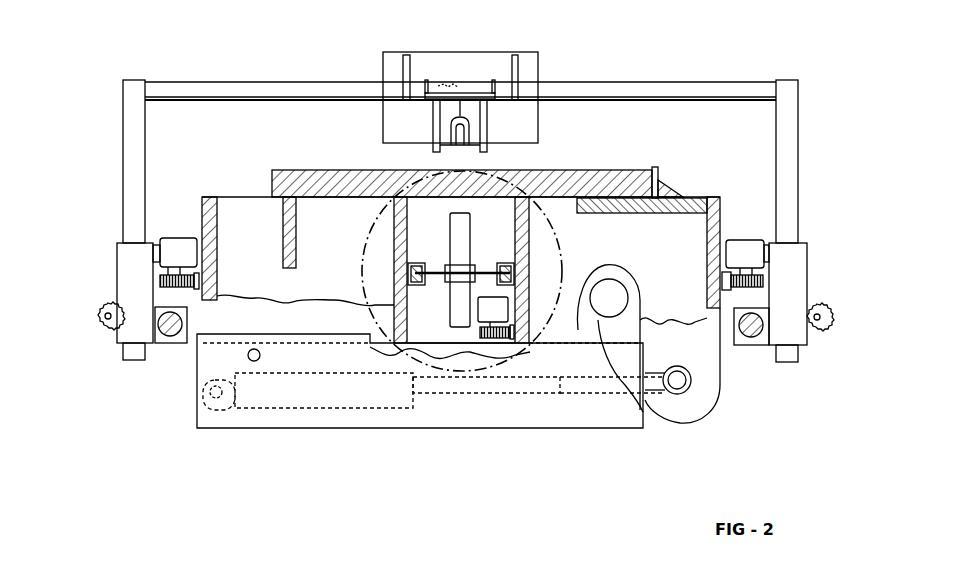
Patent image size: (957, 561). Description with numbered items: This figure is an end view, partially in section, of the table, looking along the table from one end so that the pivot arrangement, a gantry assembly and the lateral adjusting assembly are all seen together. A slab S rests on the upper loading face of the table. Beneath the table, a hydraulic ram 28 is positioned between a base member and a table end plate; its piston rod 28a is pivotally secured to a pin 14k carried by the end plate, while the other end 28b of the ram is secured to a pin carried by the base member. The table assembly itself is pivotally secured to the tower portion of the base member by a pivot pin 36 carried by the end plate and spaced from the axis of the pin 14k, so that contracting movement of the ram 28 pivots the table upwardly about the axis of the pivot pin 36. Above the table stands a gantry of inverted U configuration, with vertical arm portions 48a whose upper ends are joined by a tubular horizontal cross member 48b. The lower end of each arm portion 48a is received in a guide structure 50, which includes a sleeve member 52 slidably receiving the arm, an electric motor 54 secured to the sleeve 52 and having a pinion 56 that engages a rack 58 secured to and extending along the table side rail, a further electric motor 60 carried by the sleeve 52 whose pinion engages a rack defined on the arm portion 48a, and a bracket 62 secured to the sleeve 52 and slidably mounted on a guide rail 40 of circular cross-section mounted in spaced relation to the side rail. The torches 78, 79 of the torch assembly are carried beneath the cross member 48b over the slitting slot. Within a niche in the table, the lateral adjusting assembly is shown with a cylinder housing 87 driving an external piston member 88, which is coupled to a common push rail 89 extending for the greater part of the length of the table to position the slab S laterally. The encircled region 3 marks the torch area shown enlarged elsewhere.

The vertical arm portions 48a is at (130, 135).
The tubular horizontal cross member 48b is at (700, 88).
The slab / support plate S is at (298, 170).
The push rail 89 is at (652, 165).
The external piston member 88 is at (672, 190).
The electric motor 54 is at (740, 240).
The sleeve member 52 is at (805, 245).
The guide structure 50 is at (108, 263).
The torch 78 is at (407, 271).
The torch 79 is at (440, 237).
The cylinder housing 87 is at (650, 215).
The rack 58 is at (710, 290).
The pinion 56 is at (728, 290).
The guide rail 40 is at (173, 338).
The bracket 62 is at (760, 345).
The electric motor 60 is at (825, 332).
The pivot pin 36 is at (607, 303).
The pin 14k is at (680, 395).
The piston rod 28a is at (648, 395).
The other end of the ram 28b is at (220, 400).
The hydraulic ram 28 is at (352, 400).
The drive unit 3 is at (492, 410).